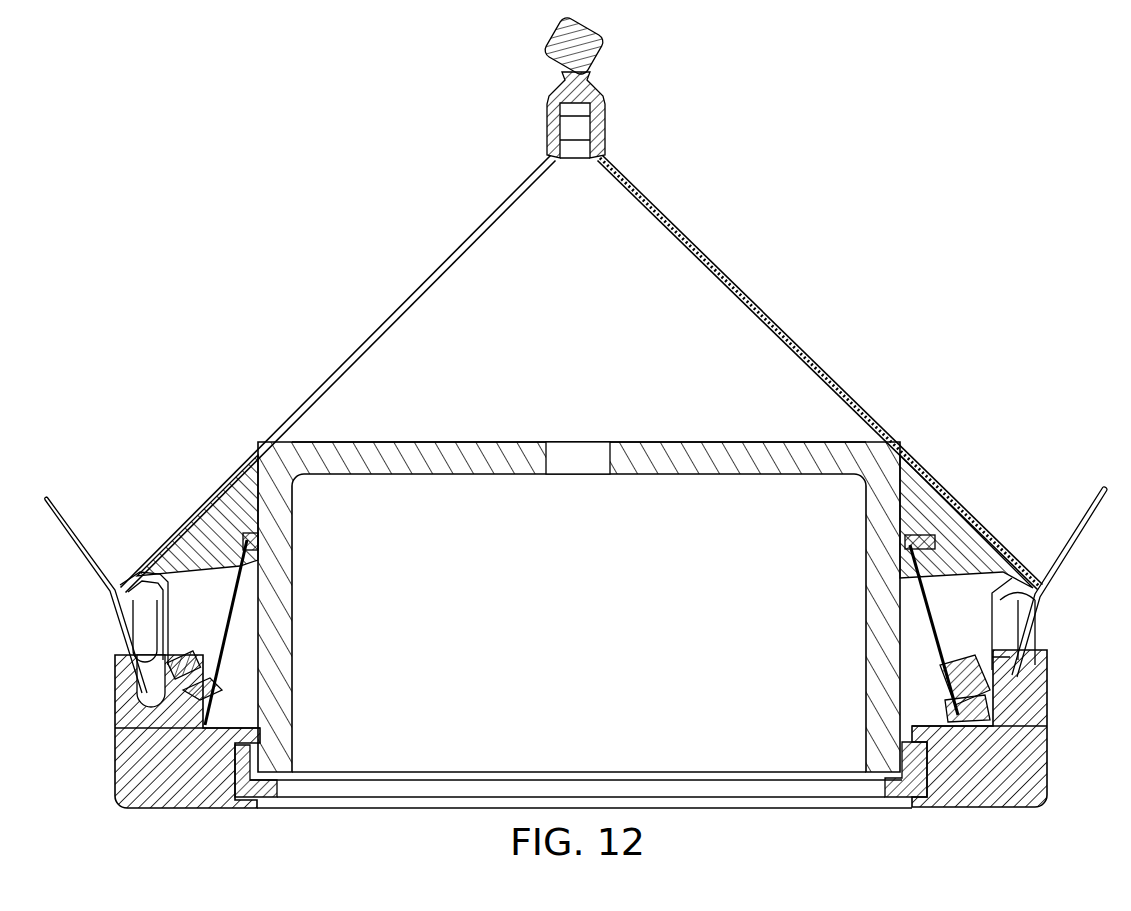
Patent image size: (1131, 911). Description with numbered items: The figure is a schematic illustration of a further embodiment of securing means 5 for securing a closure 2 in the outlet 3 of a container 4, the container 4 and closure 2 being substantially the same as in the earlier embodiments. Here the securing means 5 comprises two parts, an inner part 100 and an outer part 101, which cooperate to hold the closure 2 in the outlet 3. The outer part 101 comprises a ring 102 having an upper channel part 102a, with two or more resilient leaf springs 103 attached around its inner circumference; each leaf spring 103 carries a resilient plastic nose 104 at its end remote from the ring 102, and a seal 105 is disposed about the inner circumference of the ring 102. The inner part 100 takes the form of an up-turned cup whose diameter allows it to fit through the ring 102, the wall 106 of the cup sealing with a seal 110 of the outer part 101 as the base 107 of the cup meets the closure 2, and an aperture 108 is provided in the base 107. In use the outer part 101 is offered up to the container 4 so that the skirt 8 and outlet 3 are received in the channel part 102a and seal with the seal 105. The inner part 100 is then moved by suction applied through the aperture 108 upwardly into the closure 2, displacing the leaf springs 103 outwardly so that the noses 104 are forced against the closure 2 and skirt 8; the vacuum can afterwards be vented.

The closure 2 is at (790, 346).
The outlet 3 is at (426, 397).
The container 4 is at (1085, 526).
The securing means 5 is at (1060, 768).
The skirt 8 is at (1035, 638).
The inner part 100 is at (863, 619).
The outer part 101 is at (972, 798).
The ring 102 is at (178, 802).
The channel part 102a is at (124, 692).
The resilient leaf spring 103 is at (226, 624).
The nose 104 is at (236, 491).
The seal 105 is at (184, 660).
The wall 106 is at (910, 708).
The base 107 is at (768, 452).
The aperture 108 is at (586, 456).
The seal 110 is at (262, 800).